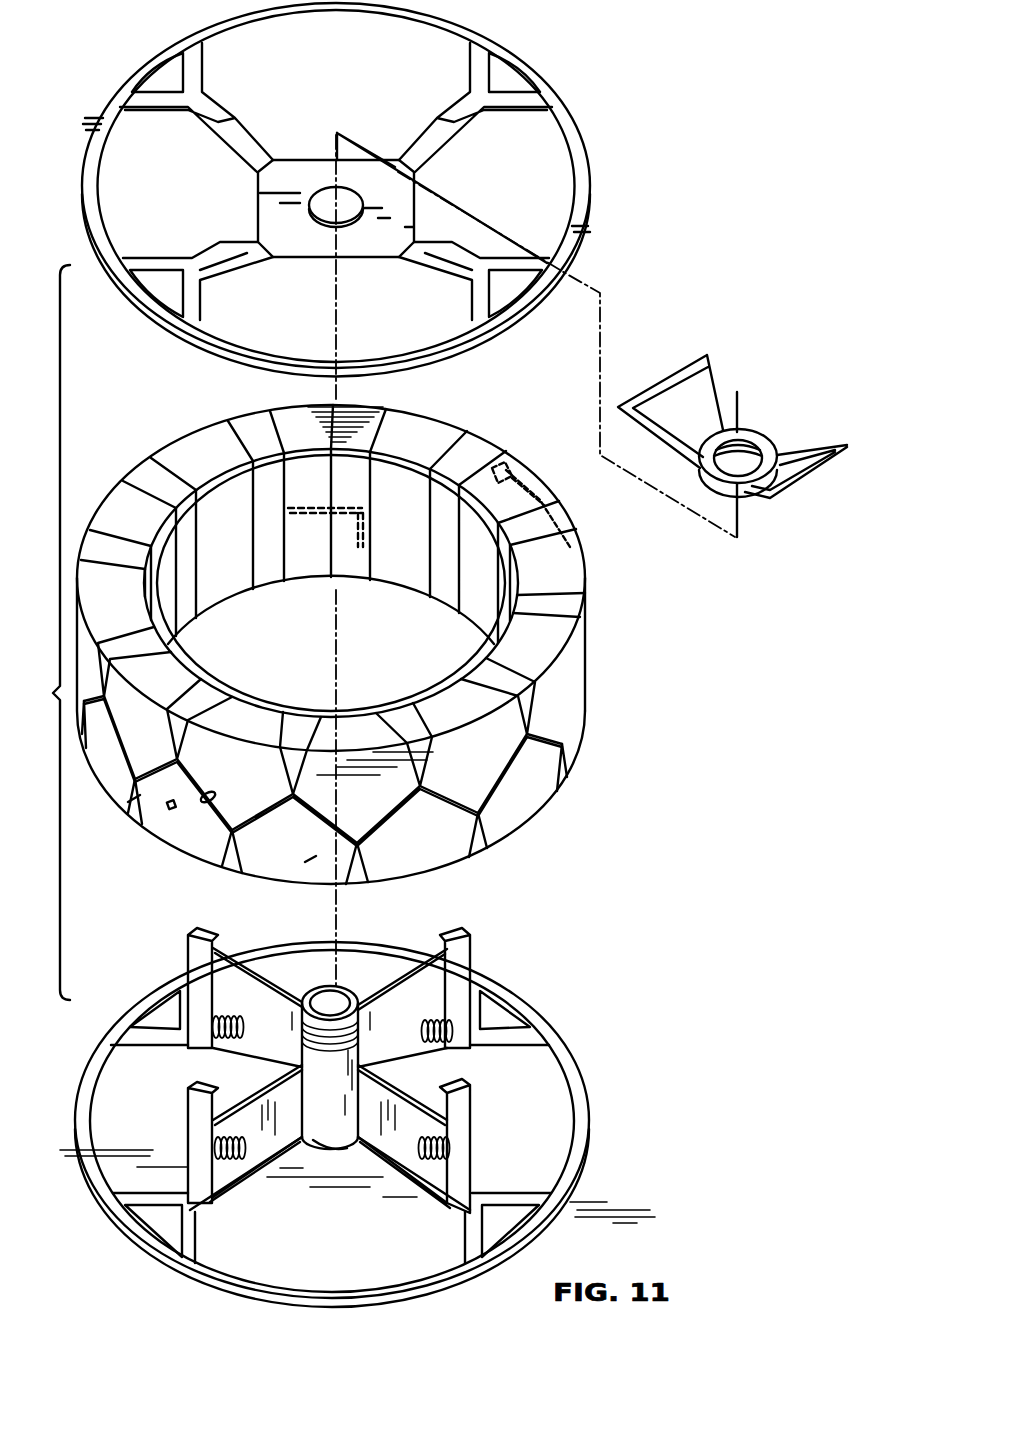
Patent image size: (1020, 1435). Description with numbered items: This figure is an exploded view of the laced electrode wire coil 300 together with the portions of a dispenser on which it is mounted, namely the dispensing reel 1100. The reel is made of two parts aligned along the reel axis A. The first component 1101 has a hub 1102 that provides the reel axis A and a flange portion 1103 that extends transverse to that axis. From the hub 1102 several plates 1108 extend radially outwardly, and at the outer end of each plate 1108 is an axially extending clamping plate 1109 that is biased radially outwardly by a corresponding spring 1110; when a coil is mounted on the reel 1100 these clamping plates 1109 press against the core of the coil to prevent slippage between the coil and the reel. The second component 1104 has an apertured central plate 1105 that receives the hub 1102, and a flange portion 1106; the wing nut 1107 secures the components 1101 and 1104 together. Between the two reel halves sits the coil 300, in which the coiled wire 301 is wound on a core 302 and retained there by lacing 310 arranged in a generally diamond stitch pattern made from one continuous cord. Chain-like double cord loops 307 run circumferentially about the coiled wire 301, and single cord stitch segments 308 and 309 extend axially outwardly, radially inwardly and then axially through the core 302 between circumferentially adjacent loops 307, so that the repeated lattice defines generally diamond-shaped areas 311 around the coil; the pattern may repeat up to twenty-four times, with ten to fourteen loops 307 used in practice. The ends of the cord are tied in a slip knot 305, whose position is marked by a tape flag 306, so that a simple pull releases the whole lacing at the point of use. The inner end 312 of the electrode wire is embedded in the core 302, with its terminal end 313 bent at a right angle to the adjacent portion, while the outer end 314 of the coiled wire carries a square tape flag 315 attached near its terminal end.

The dispensing reel 1100 is at (657, 117).
The second component of the reel 1104 is at (597, 172).
The apertured central plate 1105 is at (313, 168).
The flange portion 1106 is at (533, 77).
The wing nut 1107 is at (752, 435).
The electrode wire coil 300 is at (599, 683).
The coiled wire 301 is at (524, 826).
The core 302 is at (254, 697).
The slip knot 305 is at (208, 800).
The tape flag 306 is at (172, 815).
The double cord loops 307 is at (138, 802).
The single cord stitch segment 308 is at (290, 720).
The single cord stitch segment 309 is at (340, 717).
The lacing 310 is at (579, 721).
The diamond-shaped areas 311 is at (485, 753).
The inner end of the electrode wire 312 is at (311, 515).
The terminal end of the inner end 313 is at (358, 547).
The outer end of the coiled wire 314 is at (499, 466).
The tape flag 315 is at (522, 470).
The first component of the dispenser 1101 is at (589, 1115).
The hub 1102 is at (334, 1055).
The flange portion 1103 is at (574, 1075).
The plates 1108 is at (263, 1026).
The clamping plate 1109 is at (192, 947).
The spring 1110 is at (223, 966).
The reel axis A is at (335, 927).